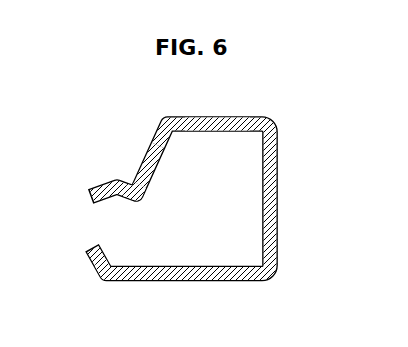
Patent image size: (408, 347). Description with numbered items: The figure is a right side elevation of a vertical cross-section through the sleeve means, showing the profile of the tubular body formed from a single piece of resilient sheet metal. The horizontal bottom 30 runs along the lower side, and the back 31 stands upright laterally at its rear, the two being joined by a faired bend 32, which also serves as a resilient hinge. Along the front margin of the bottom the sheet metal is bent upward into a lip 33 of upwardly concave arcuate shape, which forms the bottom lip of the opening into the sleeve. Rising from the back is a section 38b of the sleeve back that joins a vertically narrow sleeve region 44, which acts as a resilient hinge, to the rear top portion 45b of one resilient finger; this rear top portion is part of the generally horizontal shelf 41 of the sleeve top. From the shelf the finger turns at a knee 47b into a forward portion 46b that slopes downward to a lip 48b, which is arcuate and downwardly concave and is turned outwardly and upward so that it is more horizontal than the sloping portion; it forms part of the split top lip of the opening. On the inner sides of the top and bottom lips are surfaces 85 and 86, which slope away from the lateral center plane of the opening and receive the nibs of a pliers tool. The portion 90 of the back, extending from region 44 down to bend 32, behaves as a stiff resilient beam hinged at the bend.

The bottom 30 is at (205, 279).
The back 31 is at (273, 125).
The faired bend 32 is at (287, 268).
The lip 33 is at (91, 249).
The section of sleeve back 38b is at (278, 151).
The shelf 41 is at (257, 138).
The sleeve region 44 is at (279, 196).
The rear top portion 45b is at (197, 117).
The forward portion 46b is at (140, 158).
The knee 47b is at (161, 119).
The lip 48b is at (104, 183).
The surface 85 is at (134, 200).
The surface 86 is at (104, 257).
The portion 90 is at (288, 215).